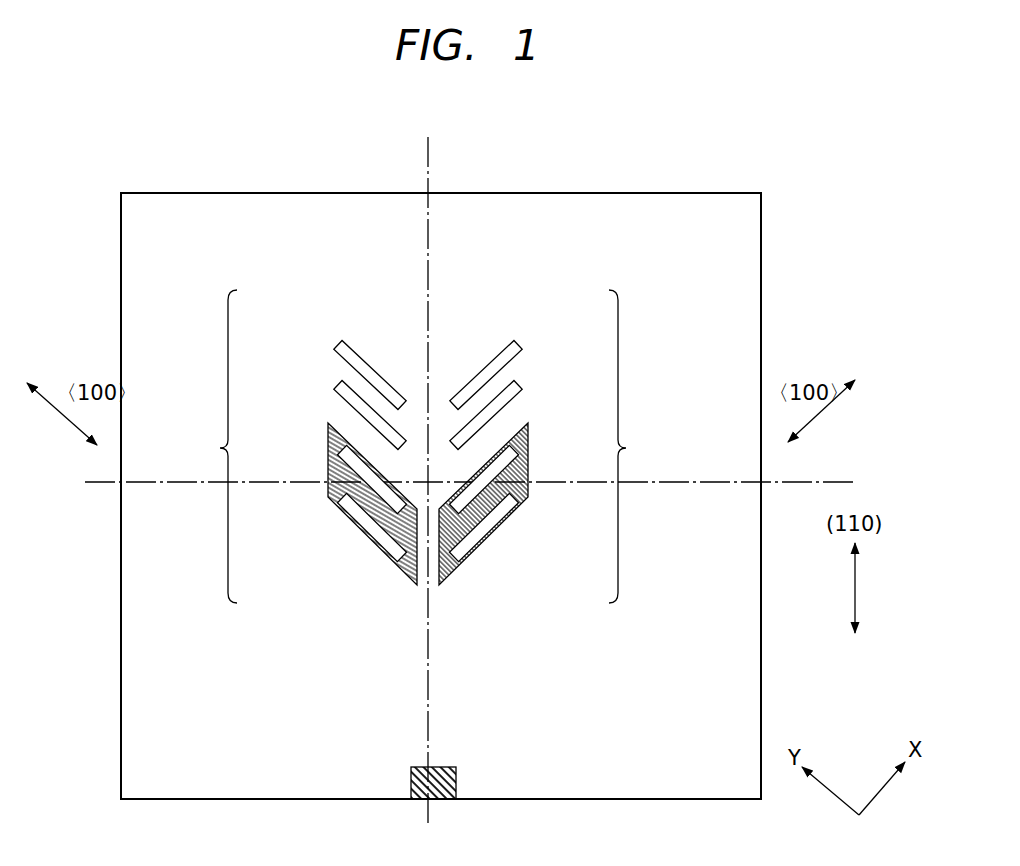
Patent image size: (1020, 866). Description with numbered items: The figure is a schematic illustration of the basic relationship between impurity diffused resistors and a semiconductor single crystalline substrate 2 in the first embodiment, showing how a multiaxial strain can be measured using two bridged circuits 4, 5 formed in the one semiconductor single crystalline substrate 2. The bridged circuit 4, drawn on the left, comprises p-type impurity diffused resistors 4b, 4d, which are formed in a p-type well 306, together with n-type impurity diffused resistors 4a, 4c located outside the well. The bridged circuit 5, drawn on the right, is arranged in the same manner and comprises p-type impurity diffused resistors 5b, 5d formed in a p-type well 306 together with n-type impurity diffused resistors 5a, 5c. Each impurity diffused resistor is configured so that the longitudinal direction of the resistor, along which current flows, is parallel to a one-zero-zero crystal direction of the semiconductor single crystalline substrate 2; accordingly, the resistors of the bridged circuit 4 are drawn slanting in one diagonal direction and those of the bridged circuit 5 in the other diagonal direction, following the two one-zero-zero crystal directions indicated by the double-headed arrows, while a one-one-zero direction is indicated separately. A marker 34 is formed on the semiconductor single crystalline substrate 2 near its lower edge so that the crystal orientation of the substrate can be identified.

The semiconductor single crystalline substrate 2 is at (740, 229).
The bridged circuit 4 is at (303, 446).
The n-type impurity diffused resistor 4a is at (337, 345).
The p-type impurity diffused resistor 4b is at (340, 452).
The n-type impurity diffused resistor 4c is at (337, 385).
The p-type impurity diffused resistor 4d is at (340, 500).
The bridged circuit 5 is at (547, 446).
The n-type impurity diffused resistor 5a is at (518, 345).
The p-type impurity diffused resistor 5b is at (530, 440).
The n-type impurity diffused resistor 5c is at (518, 385).
The p-type impurity diffused resistor 5d is at (530, 472).
The p-type well 306 is at (400, 563).
The marker 34 is at (438, 767).